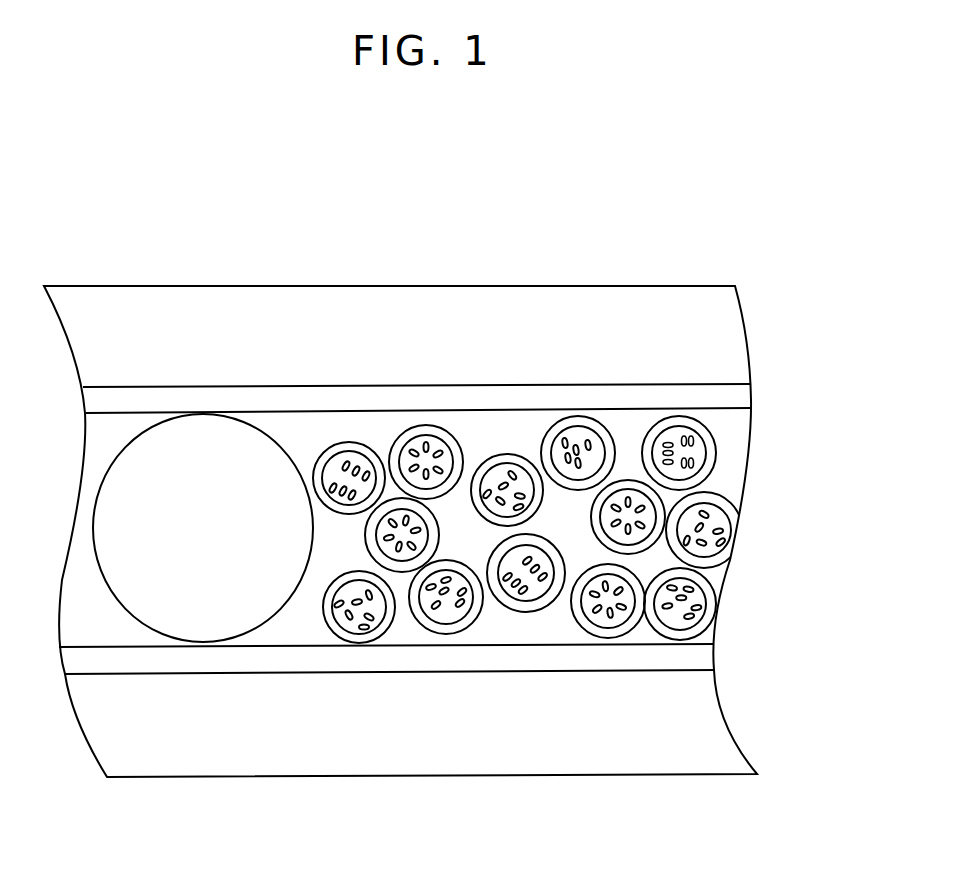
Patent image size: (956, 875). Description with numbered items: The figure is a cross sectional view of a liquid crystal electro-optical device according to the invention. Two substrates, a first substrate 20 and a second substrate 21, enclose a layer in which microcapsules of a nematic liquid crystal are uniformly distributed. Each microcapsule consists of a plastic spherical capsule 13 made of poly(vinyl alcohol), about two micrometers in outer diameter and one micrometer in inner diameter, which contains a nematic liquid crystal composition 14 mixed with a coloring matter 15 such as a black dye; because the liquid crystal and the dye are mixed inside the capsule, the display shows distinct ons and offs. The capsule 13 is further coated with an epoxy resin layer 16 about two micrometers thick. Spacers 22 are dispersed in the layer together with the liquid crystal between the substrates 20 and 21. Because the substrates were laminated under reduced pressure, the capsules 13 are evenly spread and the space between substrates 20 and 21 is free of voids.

The plastic spherical capsule 13 is at (736, 455).
The nematic liquid crystal composition 14 is at (698, 453).
The coloring matter 15 is at (698, 453).
The epoxy resin layer 16 is at (507, 635).
The first substrate 20 is at (713, 718).
The second substrate 21 is at (738, 360).
The spacer 22 is at (200, 440).